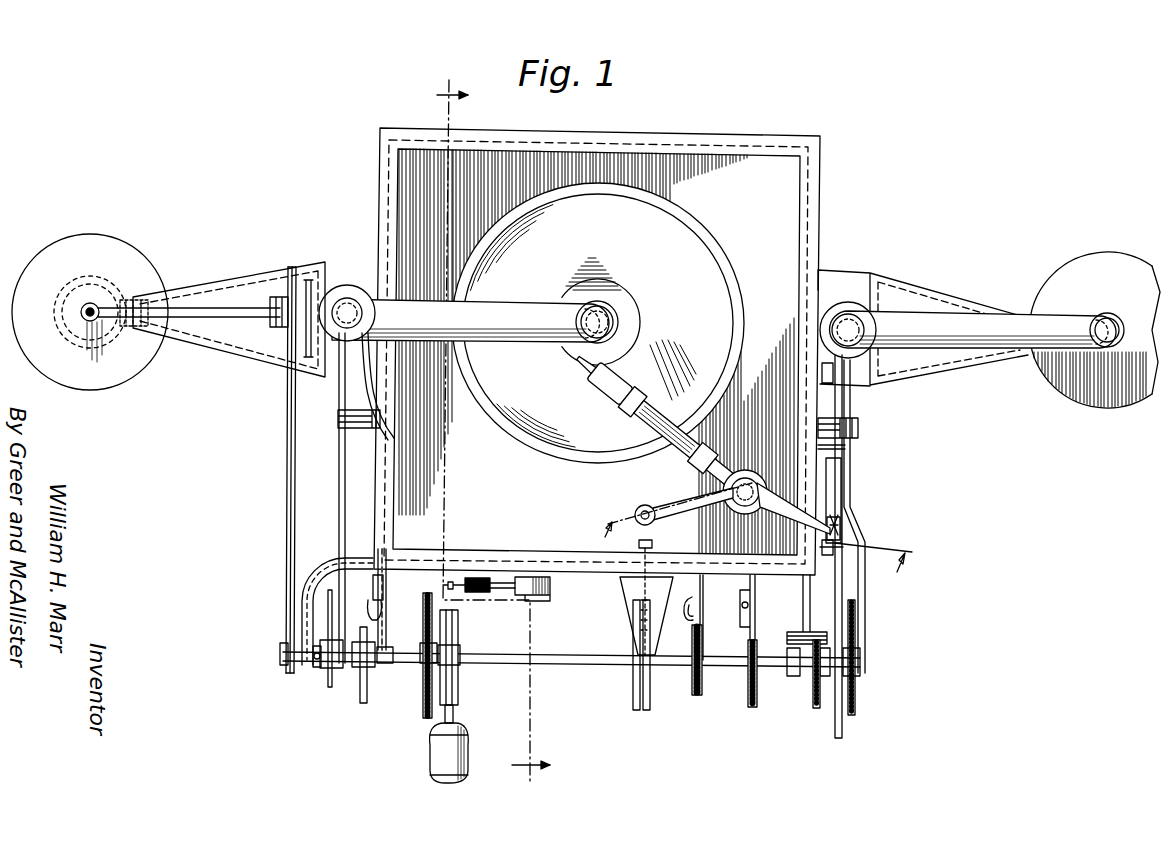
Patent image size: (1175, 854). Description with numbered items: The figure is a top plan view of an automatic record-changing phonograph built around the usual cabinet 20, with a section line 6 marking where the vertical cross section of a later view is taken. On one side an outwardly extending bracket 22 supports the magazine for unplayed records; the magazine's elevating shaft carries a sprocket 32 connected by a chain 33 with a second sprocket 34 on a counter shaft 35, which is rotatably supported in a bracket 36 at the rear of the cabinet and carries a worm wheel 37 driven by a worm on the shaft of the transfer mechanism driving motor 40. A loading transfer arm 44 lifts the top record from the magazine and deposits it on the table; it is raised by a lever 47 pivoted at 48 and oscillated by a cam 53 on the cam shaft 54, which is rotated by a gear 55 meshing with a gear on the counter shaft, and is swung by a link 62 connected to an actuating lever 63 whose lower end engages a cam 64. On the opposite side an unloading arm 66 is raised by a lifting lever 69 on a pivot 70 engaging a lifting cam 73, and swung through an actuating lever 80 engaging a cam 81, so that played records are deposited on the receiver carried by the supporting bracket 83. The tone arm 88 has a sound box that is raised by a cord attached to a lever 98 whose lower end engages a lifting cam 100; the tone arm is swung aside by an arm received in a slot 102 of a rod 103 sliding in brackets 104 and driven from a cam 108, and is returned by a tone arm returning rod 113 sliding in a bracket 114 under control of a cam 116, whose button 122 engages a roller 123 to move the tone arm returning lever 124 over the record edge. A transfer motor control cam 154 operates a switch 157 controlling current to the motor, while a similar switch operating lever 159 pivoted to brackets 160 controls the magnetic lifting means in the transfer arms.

The section line 6— 6 is at (489, 427).
The cabinet 20 is at (822, 146).
The bracket 22 is at (228, 289).
The sprocket 32 is at (310, 298).
The chain 33 is at (287, 501).
The second sprocket 34 is at (281, 655).
The shaft 35 is at (315, 664).
The bracket 36 is at (325, 580).
The worm wheel 37 is at (458, 690).
The transfer mechanism driving motor 40 is at (470, 740).
The loading transfer arm 44 is at (400, 299).
The lever 47 is at (339, 493).
The pivot 48 is at (340, 418).
The cam 53 is at (333, 667).
The cam shaft 54 is at (591, 643).
The gear 55 is at (423, 707).
The link 62 is at (378, 440).
The actuating lever 63 is at (374, 592).
The cam 64 is at (367, 690).
The unloading arm 66 is at (935, 326).
The lifting lever 69 is at (851, 515).
The pivot 70 is at (859, 428).
The lifting cam 73 is at (856, 706).
The actuating lever 80 is at (802, 602).
The cam 81 is at (815, 705).
The supporting bracket 83 is at (967, 362).
The tone arm 88 is at (722, 460).
The lever 98 is at (749, 614).
The lifting cam 100 is at (751, 708).
The slot 102 is at (842, 466).
The rod 103 is at (846, 448).
The brackets 104 is at (860, 384).
The cam 108 is at (843, 729).
The tone arm returning rod 113 is at (651, 698).
The bracket 114 is at (632, 594).
The cam 116 is at (634, 699).
The button 122 is at (639, 545).
The roller 123 is at (640, 506).
The tone arm returning lever 124 is at (657, 522).
The transfer motor control cam 154 is at (537, 577).
The switch 157 is at (472, 575).
The switch operating lever 159 is at (697, 603).
The brackets 160 is at (703, 686).